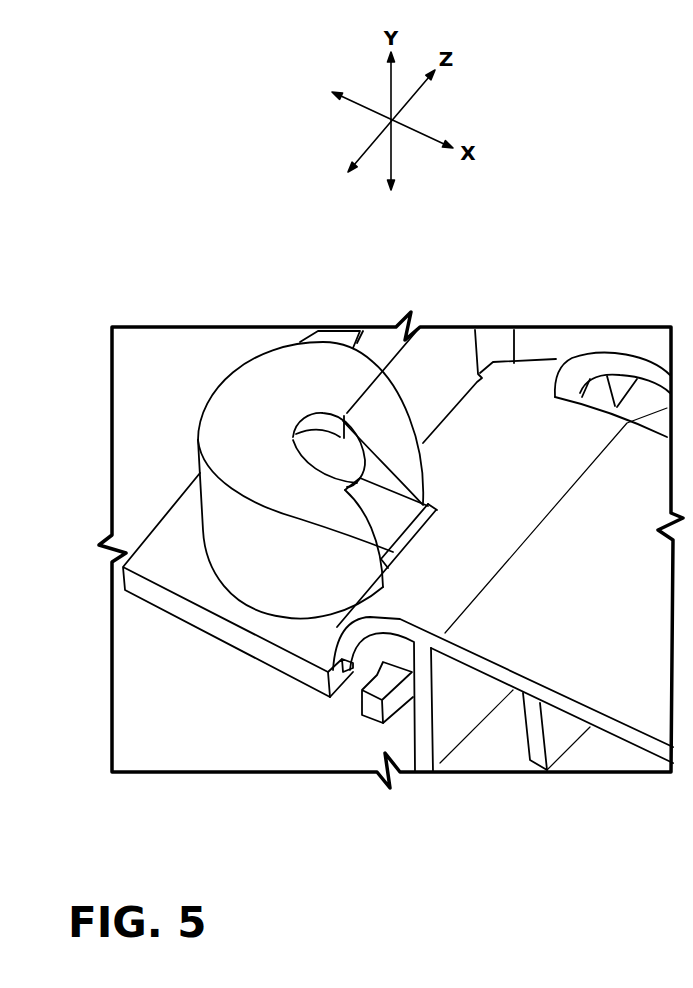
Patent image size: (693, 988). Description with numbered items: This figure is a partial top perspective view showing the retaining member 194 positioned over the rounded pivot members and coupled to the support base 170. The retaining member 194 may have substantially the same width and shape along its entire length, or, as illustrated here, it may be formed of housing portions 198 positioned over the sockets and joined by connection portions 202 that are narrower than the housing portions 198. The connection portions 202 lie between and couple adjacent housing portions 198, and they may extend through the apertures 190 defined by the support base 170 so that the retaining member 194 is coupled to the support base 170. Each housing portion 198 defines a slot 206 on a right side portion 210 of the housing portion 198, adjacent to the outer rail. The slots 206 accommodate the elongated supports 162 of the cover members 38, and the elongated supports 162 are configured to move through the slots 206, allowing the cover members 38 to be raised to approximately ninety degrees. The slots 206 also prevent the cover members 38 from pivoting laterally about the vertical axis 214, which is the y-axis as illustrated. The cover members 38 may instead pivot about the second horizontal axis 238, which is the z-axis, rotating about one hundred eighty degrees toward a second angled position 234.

The cover member 38 is at (587, 650).
The elongated support 162 is at (387, 513).
The support base 170 is at (323, 457).
The aperture 190 is at (498, 372).
The retaining member 194 is at (237, 405).
The housing portion 198 is at (253, 473).
The connection portion 202 is at (424, 372).
The slot 206 is at (377, 460).
The right side portion 210 is at (353, 574).
The vertical axis 214 is at (393, 157).
The second angled position 234 is at (412, 102).
The second horizontal axis 238 is at (367, 108).